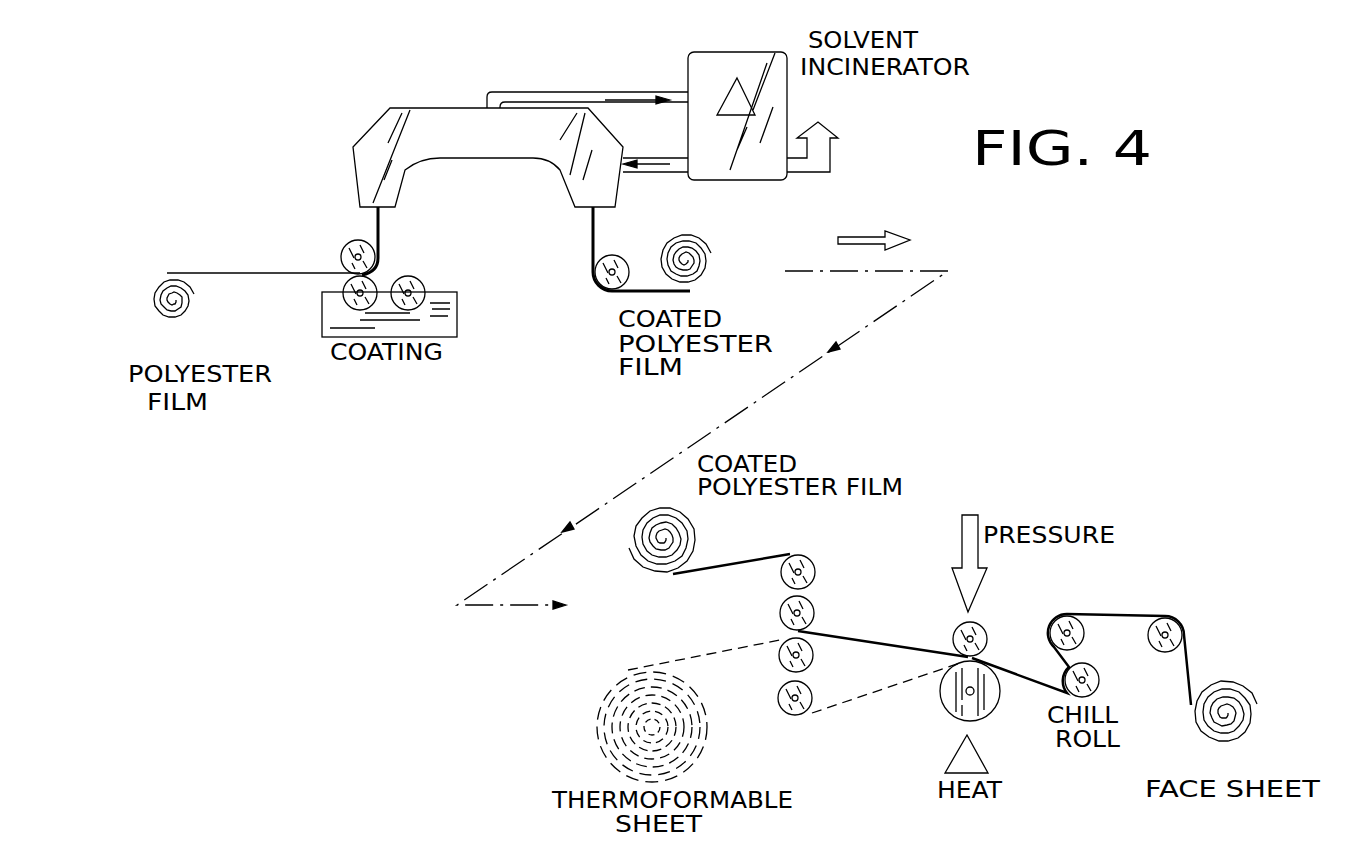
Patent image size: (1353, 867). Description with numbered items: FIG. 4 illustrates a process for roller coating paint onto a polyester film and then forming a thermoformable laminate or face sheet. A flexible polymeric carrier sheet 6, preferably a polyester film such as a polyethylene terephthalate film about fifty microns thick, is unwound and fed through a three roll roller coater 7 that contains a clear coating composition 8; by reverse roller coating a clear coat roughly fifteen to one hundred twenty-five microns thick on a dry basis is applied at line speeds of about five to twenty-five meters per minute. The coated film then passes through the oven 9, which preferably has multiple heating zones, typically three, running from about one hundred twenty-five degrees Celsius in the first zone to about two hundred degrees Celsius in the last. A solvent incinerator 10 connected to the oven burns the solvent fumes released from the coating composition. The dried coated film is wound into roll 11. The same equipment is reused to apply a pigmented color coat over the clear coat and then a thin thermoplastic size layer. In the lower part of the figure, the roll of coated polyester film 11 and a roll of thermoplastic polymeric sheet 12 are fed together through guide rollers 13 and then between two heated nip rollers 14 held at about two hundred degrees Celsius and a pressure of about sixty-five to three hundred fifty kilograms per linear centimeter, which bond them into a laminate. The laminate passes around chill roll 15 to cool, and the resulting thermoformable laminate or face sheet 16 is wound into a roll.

The flexible polymeric carrier sheet 6 is at (168, 273).
The roller coater 7 is at (435, 283).
The clear coating composition 8 is at (447, 320).
The oven 9 is at (493, 158).
The solvent incinerator 10 is at (795, 35).
The roll of coated polyester film 11 is at (714, 269).
The thermoformable sheet roll 12 is at (600, 727).
The guide rollers 13 is at (780, 592).
The heated nip rollers 14 is at (940, 686).
The chill roll 15 is at (1100, 677).
The laminate or face sheet 16 is at (1262, 717).